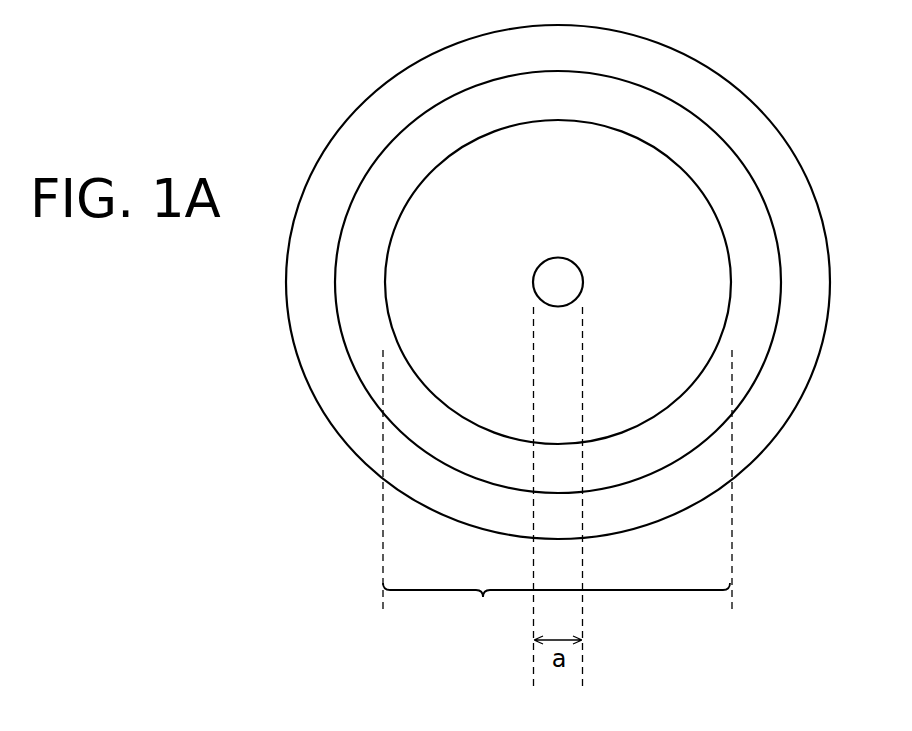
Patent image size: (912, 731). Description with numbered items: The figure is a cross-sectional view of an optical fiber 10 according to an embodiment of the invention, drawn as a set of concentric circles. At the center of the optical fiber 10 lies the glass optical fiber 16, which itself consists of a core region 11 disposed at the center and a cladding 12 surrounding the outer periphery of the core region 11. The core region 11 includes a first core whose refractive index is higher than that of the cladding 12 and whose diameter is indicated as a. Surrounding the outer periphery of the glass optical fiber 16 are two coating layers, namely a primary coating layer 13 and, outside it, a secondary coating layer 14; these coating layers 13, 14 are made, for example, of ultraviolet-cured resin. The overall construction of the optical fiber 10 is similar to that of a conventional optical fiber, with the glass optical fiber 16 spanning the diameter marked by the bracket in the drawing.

The optical fiber 10 is at (353, 43).
The core region 11 is at (547, 283).
The cladding 12 is at (607, 157).
The primary coating layer 13 is at (687, 142).
The secondary coating layer 14 is at (772, 165).
The glass optical fiber 16 is at (557, 492).